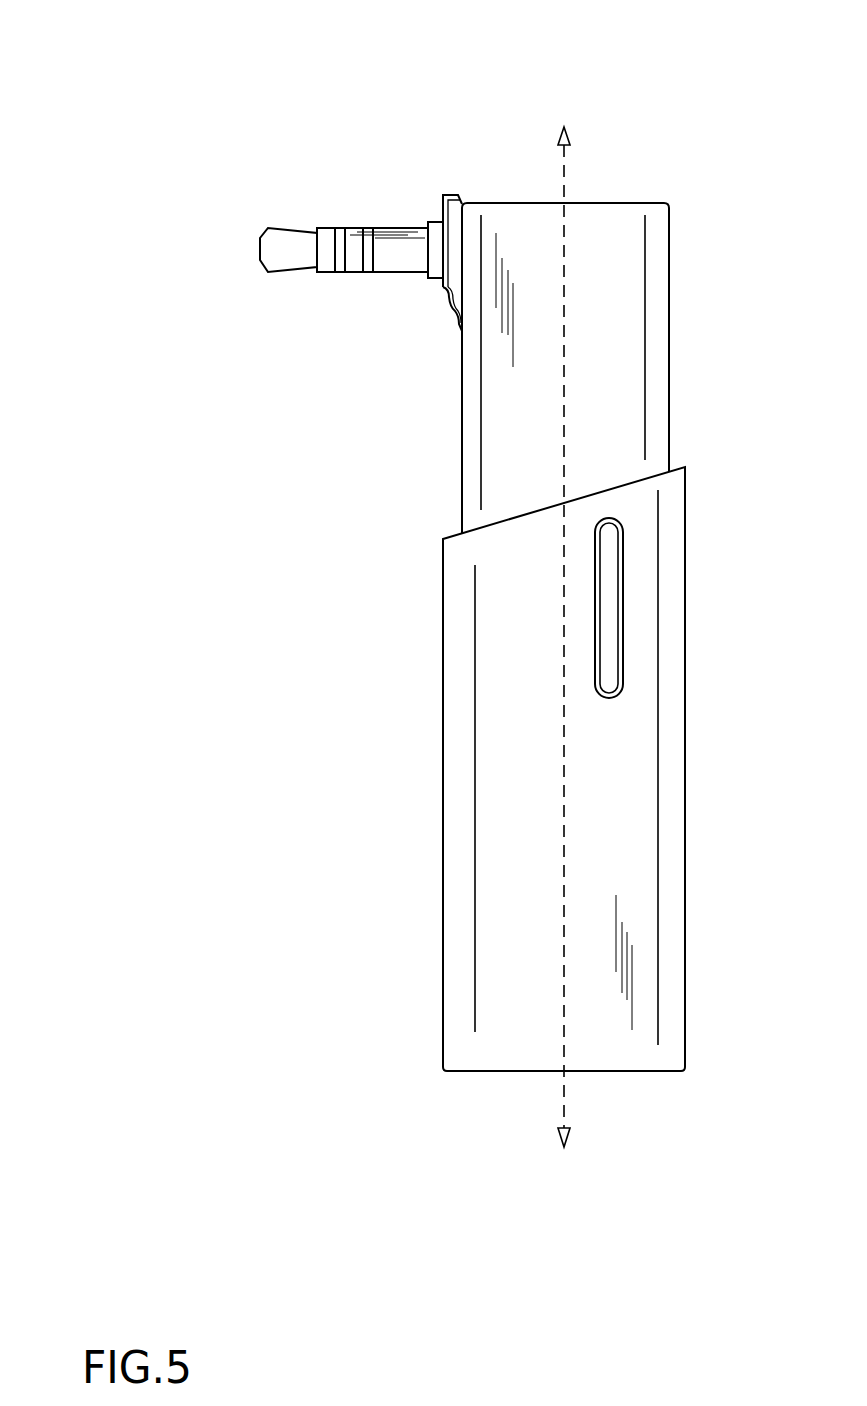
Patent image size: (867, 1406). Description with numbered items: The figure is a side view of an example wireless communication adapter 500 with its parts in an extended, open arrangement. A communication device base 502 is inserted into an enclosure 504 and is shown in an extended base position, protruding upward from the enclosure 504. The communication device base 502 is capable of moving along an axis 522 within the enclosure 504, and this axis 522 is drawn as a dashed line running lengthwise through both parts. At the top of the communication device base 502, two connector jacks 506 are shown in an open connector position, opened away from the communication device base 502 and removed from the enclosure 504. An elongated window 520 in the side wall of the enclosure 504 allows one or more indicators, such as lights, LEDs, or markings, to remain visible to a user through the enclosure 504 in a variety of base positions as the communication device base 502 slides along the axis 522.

The wireless communication adapter 500 is at (192, 58).
The communication device base 502 is at (502, 223).
The enclosure 504 is at (454, 743).
The connector jacks 506 is at (342, 228).
The window 520 is at (608, 620).
The axis 522 is at (565, 1087).